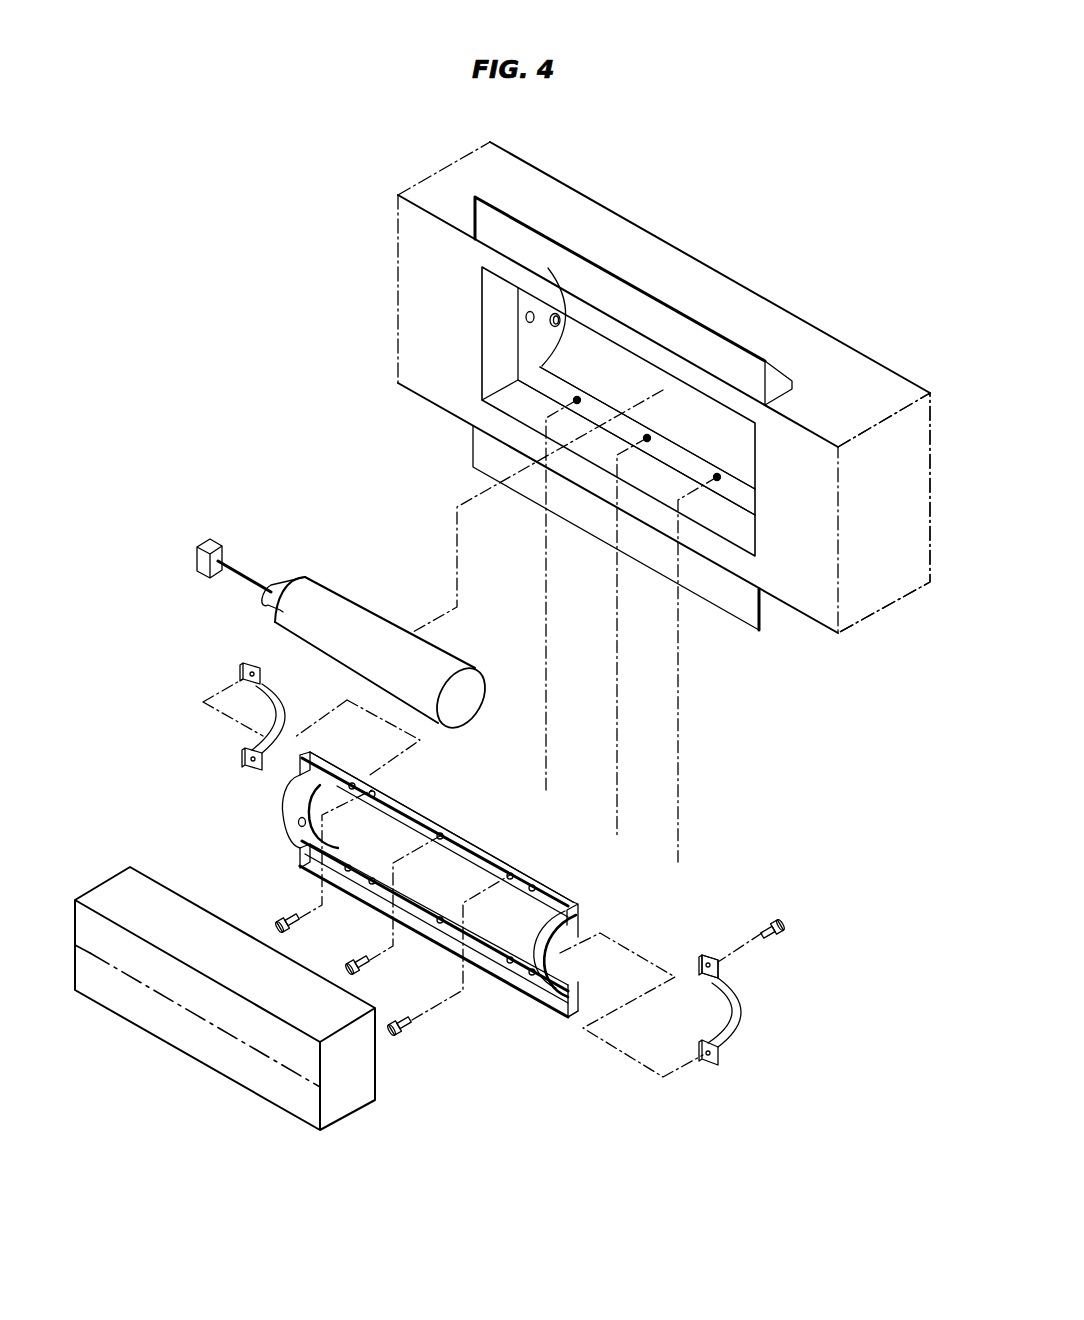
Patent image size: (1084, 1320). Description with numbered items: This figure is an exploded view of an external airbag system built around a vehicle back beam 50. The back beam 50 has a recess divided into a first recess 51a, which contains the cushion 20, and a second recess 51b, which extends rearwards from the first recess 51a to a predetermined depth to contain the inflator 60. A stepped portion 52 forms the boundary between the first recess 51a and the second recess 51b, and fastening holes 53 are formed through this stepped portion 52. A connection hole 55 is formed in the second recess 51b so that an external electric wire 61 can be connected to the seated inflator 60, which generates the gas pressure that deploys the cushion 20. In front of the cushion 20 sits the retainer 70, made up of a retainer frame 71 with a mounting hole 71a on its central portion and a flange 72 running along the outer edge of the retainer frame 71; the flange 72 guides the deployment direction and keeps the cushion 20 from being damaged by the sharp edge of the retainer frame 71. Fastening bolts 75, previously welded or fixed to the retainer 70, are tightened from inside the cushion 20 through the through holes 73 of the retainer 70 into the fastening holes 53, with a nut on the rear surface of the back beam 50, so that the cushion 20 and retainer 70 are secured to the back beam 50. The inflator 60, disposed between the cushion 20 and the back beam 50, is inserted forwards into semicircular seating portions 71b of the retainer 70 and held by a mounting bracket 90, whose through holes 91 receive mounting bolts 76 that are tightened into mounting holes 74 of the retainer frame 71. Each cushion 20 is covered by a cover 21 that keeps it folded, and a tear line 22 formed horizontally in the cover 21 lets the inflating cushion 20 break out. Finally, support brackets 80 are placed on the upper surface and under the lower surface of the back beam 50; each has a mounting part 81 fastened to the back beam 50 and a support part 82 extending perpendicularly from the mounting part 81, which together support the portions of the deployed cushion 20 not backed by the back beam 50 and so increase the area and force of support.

The cushion 20 is at (225, 1027).
The cover 21 is at (272, 1070).
The tear line 22 is at (228, 1033).
The back beam 50 is at (634, 494).
The first recess 51a is at (607, 450).
The second recess 51b is at (722, 322).
The stepped portion 52 is at (697, 465).
The fastening hole 53 is at (526, 318).
The connection hole 55 is at (556, 314).
The inflator 60 is at (346, 610).
The external electric wire 61 is at (262, 574).
The retainer 70 is at (427, 918).
The retainer frame 71 is at (470, 863).
The mounting hole 71a is at (398, 838).
The semicircular seating portion 71b is at (558, 967).
The flange 72 is at (437, 896).
The through hole 73 is at (376, 794).
The mounting hole 74 is at (350, 783).
The fastening bolt 75 is at (402, 1036).
The mounting bolt 76 is at (783, 930).
The support bracket 80 is at (680, 441).
The mounting part 81 is at (775, 385).
The support part 82 is at (725, 337).
The mounting bracket 90 is at (531, 870).
The through hole 91 is at (724, 979).